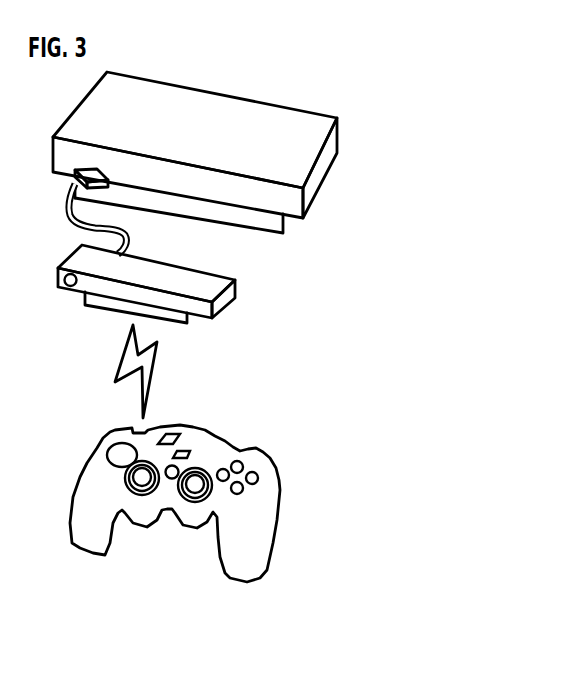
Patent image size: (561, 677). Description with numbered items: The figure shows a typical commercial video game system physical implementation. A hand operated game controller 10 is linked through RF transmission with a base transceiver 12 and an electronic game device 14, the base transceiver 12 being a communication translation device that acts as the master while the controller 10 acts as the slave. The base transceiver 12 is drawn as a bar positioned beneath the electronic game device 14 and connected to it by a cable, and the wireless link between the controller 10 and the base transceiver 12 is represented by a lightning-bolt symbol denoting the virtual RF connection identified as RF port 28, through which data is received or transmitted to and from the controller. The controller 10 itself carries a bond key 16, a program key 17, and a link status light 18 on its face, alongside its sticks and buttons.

The hand operated game controller 10 is at (284, 455).
The base transceiver 12 is at (245, 307).
The electronic game device 14 is at (319, 212).
The bond key 16 is at (192, 420).
The program key 17 is at (205, 448).
The link status light 18 is at (166, 489).
The RF port 28 is at (107, 358).